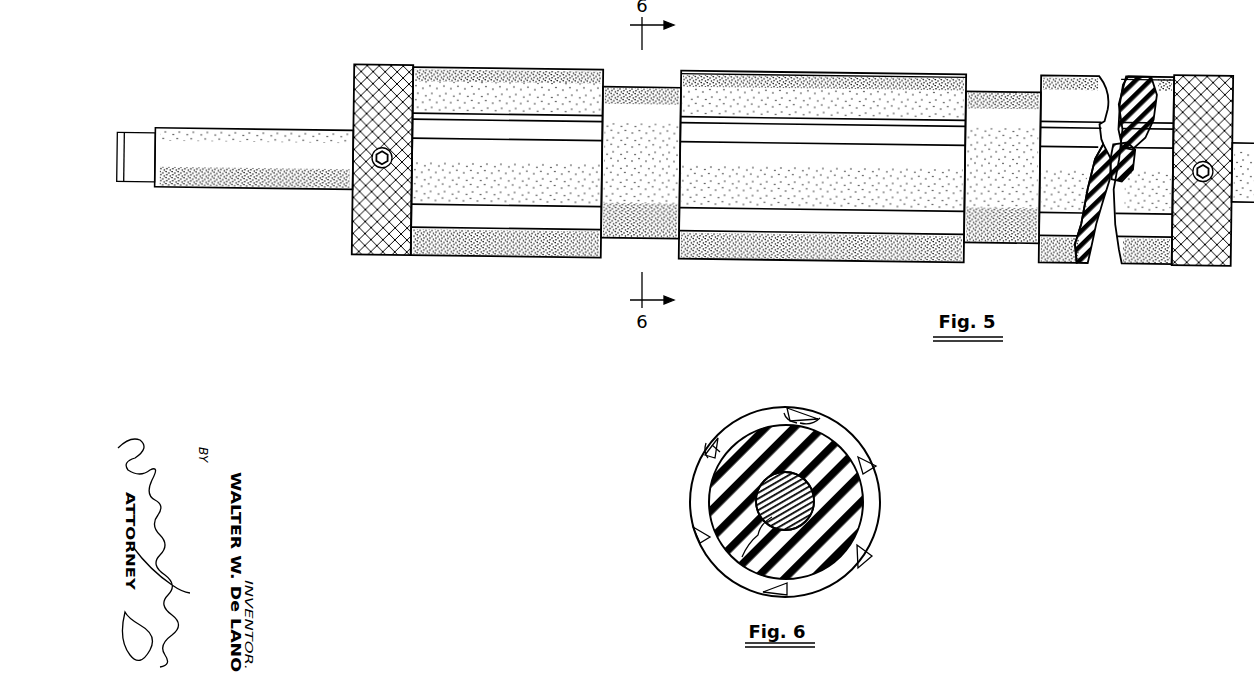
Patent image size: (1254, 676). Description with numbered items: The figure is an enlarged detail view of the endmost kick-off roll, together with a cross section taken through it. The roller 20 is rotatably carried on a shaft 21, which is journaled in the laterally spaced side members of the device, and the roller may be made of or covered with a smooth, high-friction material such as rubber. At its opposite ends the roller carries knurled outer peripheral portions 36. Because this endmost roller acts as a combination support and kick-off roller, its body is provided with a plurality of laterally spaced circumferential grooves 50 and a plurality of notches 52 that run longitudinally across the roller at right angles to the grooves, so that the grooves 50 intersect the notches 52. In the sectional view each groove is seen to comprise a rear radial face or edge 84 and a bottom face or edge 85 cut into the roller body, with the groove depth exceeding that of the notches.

In FIG. 5, the roller 20 is at (767, 83).
In FIG. 6, the roller 20 is at (855, 502).
In FIG. 5, the shaft 21 is at (215, 136).
In FIG. 6, the shaft 21 is at (740, 556).
In FIG. 5, the knurled outer peripheral portion 36 is at (377, 65).
In FIG. 5, the circumferential groove 50 is at (618, 80).
In FIG. 6, the circumferential groove 50 is at (848, 443).
In FIG. 5, the notch 52 is at (882, 76).
In FIG. 6, the notch 52 is at (792, 414).
In FIG. 6, the rear radial face 84 is at (790, 410).
In FIG. 6, the bottom face 85 is at (818, 421).